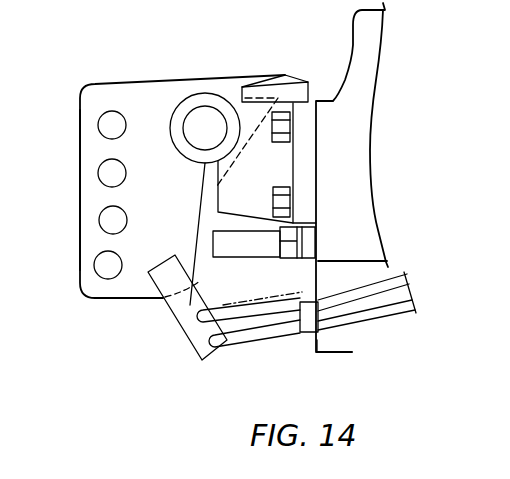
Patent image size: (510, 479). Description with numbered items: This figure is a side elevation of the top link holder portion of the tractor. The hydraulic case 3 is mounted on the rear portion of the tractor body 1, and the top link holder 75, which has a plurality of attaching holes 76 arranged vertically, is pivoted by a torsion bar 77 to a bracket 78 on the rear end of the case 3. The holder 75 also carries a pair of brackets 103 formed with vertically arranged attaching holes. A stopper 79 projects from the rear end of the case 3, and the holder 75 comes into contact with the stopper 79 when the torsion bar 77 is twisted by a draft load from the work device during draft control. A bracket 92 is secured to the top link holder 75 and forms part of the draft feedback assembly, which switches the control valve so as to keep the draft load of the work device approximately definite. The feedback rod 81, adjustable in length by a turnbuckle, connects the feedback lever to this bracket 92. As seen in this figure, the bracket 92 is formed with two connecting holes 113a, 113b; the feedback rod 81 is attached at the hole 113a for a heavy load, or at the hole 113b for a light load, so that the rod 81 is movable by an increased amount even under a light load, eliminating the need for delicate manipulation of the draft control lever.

The tractor body 1 is at (336, 342).
The hydraulic case 3 is at (352, 65).
The top link holder 75 is at (110, 81).
The attaching holes 76 is at (100, 180).
The torsion bar 77 is at (198, 120).
The bracket 78 is at (255, 118).
The stopper 79 is at (268, 250).
The feedback rod 81 is at (283, 325).
The bracket 92 is at (192, 302).
The brackets 103 is at (86, 144).
The connecting hole 113a is at (195, 320).
The connecting hole 113b is at (205, 342).